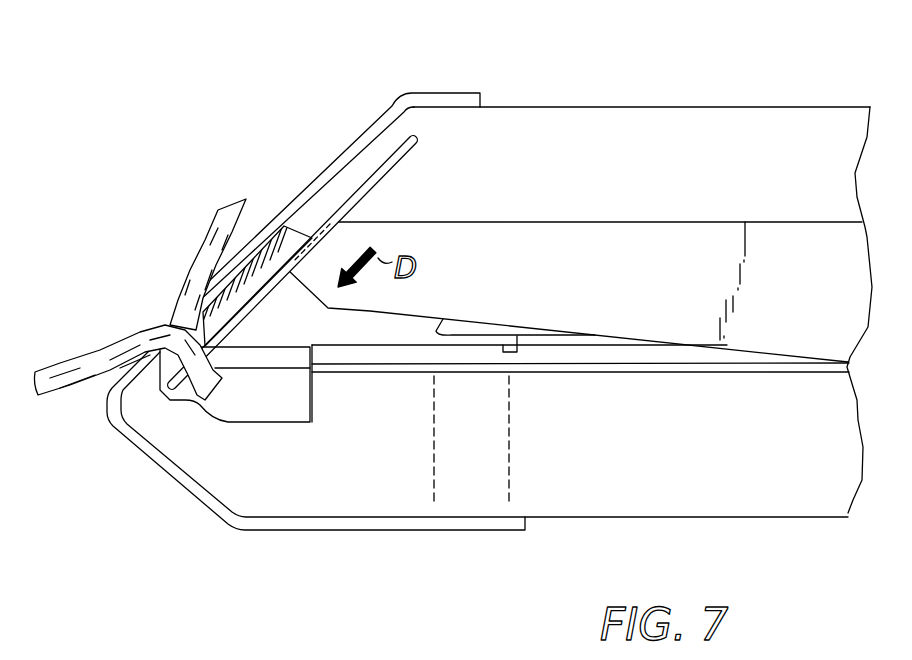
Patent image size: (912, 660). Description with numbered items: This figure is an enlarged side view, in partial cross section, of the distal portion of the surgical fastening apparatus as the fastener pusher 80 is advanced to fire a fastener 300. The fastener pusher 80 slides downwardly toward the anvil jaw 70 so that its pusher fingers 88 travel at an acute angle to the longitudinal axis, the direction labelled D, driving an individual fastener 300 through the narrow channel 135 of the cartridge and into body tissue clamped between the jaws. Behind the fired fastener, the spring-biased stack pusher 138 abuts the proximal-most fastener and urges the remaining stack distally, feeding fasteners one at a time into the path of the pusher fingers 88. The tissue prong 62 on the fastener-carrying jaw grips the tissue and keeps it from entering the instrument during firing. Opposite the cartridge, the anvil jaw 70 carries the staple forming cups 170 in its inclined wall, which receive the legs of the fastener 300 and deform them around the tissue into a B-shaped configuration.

The tissue prong 62 is at (378, 122).
The fastener pusher 80 is at (517, 212).
The pusher fingers 88 is at (330, 218).
The fastener 300 is at (286, 224).
The narrow channel 135 is at (230, 286).
The stack pusher 138 is at (448, 330).
The staple forming cups 170 is at (144, 430).
The anvil jaw 70 is at (188, 521).